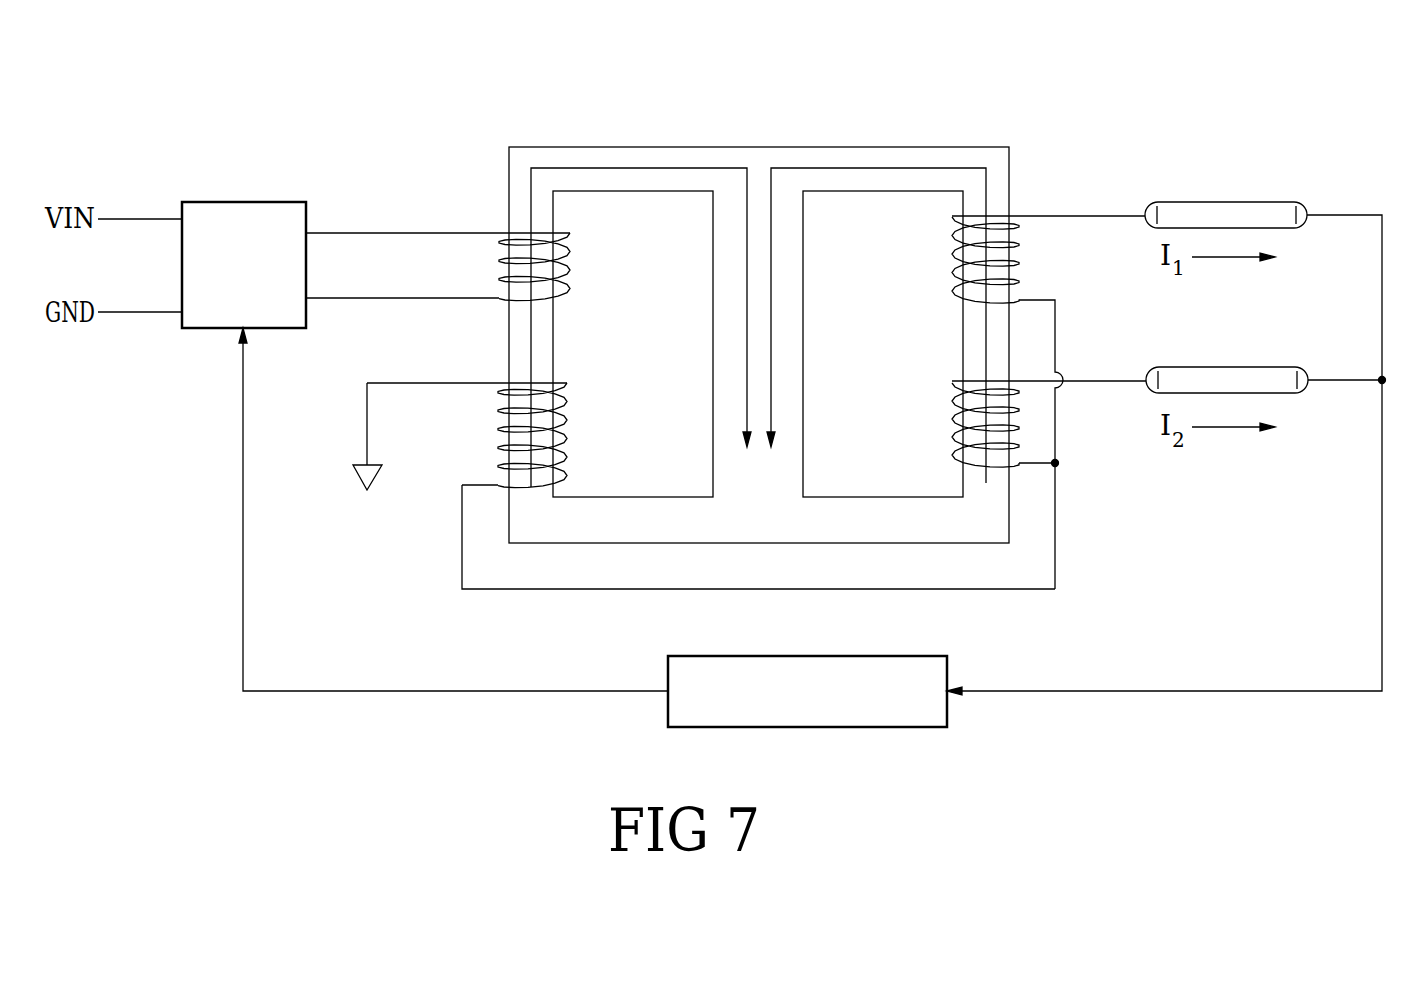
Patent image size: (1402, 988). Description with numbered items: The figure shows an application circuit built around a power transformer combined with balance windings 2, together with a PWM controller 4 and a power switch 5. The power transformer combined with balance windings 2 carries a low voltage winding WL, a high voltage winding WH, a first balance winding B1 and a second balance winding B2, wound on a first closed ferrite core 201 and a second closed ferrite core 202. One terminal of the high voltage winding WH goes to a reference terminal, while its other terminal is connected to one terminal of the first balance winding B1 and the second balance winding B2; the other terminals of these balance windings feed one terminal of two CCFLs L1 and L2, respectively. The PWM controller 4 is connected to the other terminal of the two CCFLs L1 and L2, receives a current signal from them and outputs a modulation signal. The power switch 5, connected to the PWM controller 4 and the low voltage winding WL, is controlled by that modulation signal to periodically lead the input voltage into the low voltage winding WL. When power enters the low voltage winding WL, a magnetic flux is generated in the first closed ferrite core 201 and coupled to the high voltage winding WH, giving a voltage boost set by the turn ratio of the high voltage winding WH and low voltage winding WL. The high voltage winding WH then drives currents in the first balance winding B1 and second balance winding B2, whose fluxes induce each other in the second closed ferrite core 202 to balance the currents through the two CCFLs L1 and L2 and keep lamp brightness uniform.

The power transformer combined with balance windings 2 is at (764, 132).
The first closed ferrite core 201 is at (656, 152).
The second closed ferrite core 202 is at (907, 153).
The PWM controller 4 is at (947, 712).
The power switch 5 is at (243, 202).
The low voltage winding WL is at (498, 262).
The high voltage winding WH is at (498, 430).
The first balance winding B1 is at (1020, 248).
The second balance winding B2 is at (1020, 412).
The CCFL L1 is at (1164, 433).
The CCFL L2 is at (1266, 398).